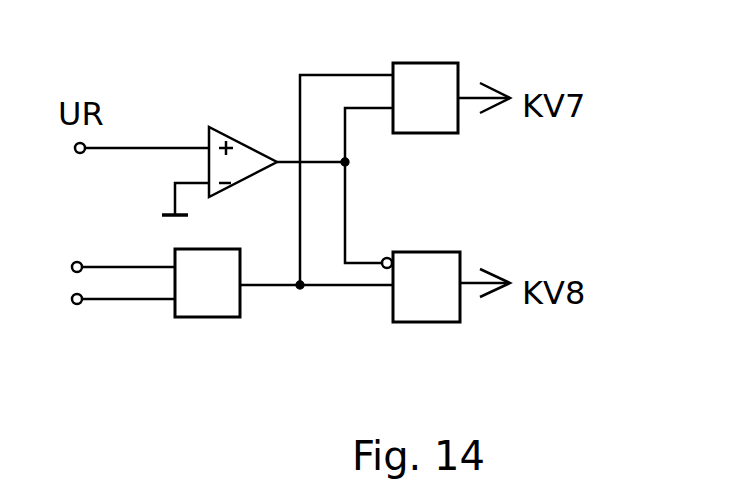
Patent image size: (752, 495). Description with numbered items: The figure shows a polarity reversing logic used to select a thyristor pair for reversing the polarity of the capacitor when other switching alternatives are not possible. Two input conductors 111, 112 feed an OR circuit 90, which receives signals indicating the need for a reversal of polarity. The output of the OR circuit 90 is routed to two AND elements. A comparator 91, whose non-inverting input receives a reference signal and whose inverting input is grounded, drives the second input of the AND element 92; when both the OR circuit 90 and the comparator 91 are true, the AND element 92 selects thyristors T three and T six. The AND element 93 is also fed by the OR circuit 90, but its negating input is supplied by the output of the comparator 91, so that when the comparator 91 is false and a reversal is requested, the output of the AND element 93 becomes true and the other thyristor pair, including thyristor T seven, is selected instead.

The OR circuit 90 is at (240, 305).
The comparator 91 is at (228, 138).
The AND element 92 is at (425, 63).
The AND element 93 is at (437, 252).
The conductor 111 is at (115, 243).
The conductor 112 is at (115, 324).